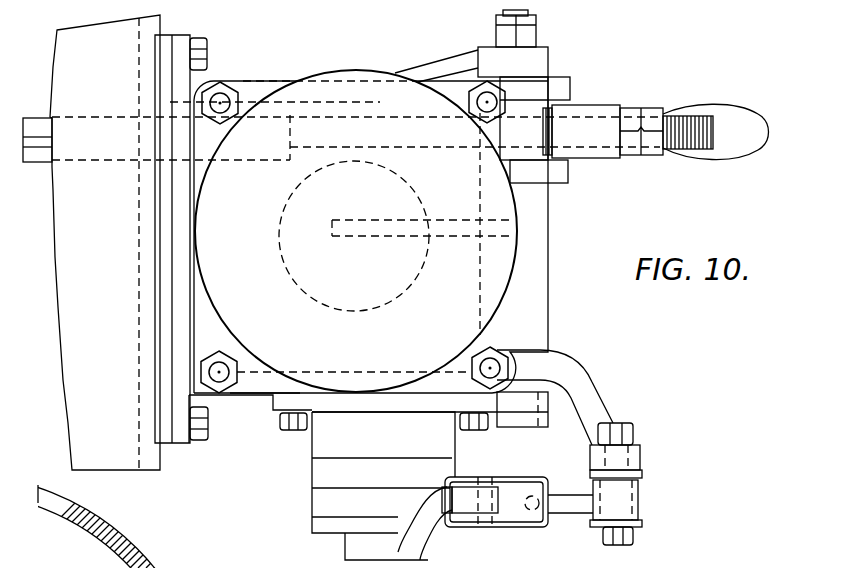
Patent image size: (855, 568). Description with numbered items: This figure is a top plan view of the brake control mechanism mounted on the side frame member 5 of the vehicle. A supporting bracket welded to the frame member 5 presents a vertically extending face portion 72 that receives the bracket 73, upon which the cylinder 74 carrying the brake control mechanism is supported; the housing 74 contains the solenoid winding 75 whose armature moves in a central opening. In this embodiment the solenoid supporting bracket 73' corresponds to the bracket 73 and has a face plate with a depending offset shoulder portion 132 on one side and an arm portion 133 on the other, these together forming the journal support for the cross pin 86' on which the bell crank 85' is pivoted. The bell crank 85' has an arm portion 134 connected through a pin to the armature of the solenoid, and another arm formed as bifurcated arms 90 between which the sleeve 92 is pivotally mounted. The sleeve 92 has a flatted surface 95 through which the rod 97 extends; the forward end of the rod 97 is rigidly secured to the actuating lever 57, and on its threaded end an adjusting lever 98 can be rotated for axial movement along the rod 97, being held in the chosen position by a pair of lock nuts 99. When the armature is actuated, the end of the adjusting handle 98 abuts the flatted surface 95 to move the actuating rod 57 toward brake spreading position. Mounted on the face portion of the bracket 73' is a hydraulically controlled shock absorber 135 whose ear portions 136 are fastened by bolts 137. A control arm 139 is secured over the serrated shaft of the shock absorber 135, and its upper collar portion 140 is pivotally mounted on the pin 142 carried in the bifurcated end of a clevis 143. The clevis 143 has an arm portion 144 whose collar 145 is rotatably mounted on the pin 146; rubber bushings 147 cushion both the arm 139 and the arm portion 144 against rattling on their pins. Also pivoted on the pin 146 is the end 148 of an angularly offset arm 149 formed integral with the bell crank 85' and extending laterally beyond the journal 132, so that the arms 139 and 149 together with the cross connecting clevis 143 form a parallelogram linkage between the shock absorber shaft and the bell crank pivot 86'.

The side frame member 5 is at (65, 68).
The actuating lever 57 is at (38, 152).
The face portion 72 is at (167, 447).
The bracket 73 is at (203, 441).
The solenoid supporting bracket 73' is at (265, 414).
The cylinder 74 is at (507, 273).
The solenoid winding 75 is at (247, 567).
The bell crank 85' is at (384, 237).
The cross pin 86' is at (433, 419).
The bifurcated arms 90 is at (548, 100).
The sleeve 92 is at (528, 155).
The flatted surface 95 is at (570, 82).
The rod 97 is at (693, 117).
The adjusting lever 98 is at (745, 112).
The lock nuts 99 is at (652, 110).
The offset shoulder portion 132 is at (580, 397).
The arm portion 133 is at (433, 65).
The arm portion 134 is at (448, 238).
The shock absorber 135 is at (318, 477).
The ear portions 136 is at (277, 408).
The bolts 137 is at (292, 430).
The control arm 139 is at (432, 545).
The collar portion 140 is at (485, 490).
The pin 142 is at (442, 490).
The clevis 143 is at (532, 527).
The arm portion 144 is at (565, 497).
The collar 145 is at (610, 508).
The pin 146 is at (622, 548).
The rubber bushings 147 is at (640, 513).
The end 148 is at (642, 455).
The offset arm 149 is at (563, 368).